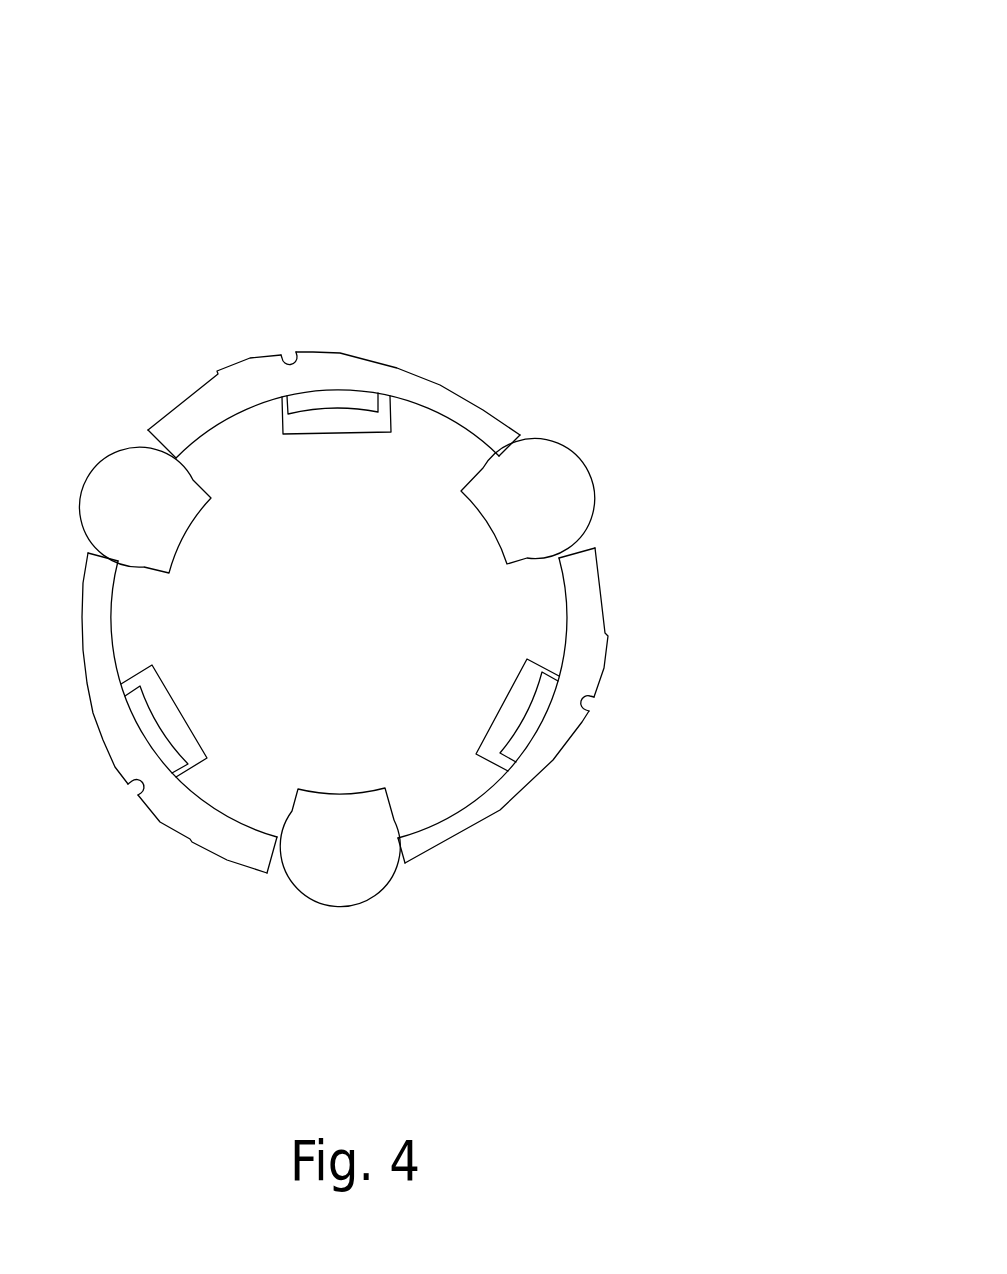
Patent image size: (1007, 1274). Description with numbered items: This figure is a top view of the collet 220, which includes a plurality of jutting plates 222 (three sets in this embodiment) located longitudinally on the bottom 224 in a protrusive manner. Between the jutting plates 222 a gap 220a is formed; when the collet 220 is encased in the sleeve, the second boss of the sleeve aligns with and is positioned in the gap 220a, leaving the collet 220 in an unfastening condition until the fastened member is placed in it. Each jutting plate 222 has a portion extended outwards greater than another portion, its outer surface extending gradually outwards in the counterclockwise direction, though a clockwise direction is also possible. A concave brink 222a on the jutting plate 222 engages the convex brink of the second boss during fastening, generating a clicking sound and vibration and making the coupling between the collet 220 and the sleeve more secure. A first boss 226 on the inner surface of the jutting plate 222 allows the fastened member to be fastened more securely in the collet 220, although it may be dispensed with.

The collet 220 is at (710, 932).
The gap 220a is at (610, 531).
The jutting plate 222 is at (395, 382).
The concave brink 222a is at (292, 330).
The bottom 224 is at (362, 582).
The first boss 226 is at (343, 425).